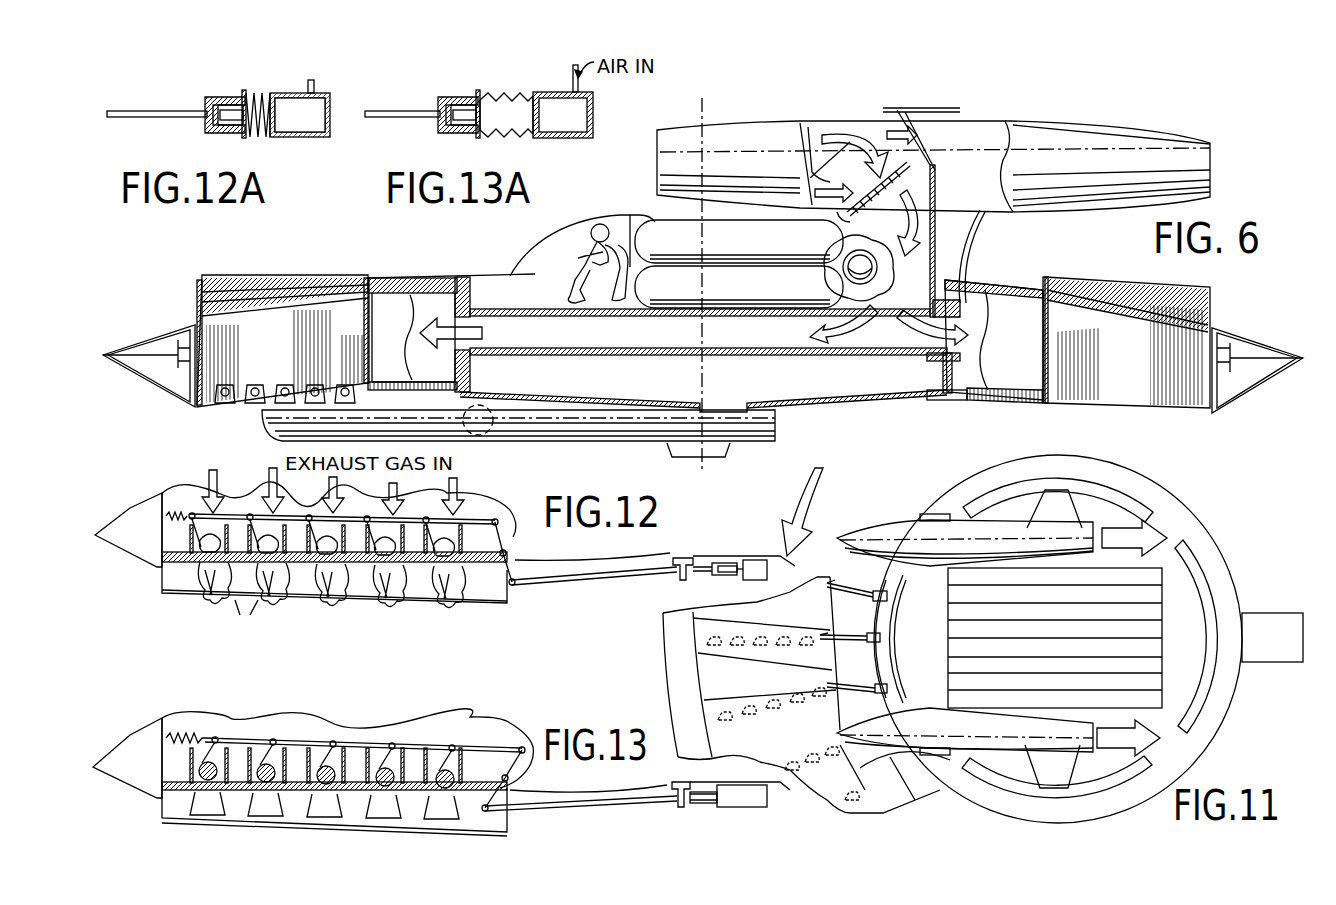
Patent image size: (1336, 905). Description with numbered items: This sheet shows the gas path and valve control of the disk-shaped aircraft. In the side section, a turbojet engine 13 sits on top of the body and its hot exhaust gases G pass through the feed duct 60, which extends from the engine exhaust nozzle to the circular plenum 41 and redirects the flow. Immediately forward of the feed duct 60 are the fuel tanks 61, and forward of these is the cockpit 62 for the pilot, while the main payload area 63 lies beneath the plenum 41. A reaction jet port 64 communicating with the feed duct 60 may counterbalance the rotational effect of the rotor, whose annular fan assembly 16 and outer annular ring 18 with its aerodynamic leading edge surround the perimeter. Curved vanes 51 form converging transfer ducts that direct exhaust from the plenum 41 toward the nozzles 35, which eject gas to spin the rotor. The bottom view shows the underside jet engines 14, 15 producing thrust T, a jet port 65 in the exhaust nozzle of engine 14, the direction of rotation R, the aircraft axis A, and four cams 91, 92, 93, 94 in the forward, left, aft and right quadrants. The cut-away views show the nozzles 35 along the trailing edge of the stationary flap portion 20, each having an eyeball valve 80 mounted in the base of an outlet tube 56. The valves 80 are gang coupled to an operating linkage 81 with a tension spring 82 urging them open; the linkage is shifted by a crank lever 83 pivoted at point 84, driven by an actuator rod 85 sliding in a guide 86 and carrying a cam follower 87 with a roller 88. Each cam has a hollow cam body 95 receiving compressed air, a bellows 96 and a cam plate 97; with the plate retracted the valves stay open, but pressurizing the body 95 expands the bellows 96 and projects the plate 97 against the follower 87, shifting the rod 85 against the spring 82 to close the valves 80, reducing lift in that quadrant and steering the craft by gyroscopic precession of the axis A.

In FIG. 6, the turbojet engine 13 is at (778, 128).
In FIG. 6, the jet engine 14 is at (553, 432).
In FIG. 11, the jet engine 14 is at (880, 530).
In FIG. 11, the jet engine 15 is at (927, 767).
In FIG. 6, the annular fan assembly 16 is at (195, 290).
In FIG. 6, the outer annular ring 18 is at (150, 382).
In FIG. 12, the outer annular ring 18 is at (137, 547).
In FIG. 13, the outer annular ring 18 is at (137, 777).
In FIG. 11, the outer annular ring 18 is at (667, 655).
In FIG. 12, the flap portion 20 is at (418, 592).
In FIG. 13, the flap portion 20 is at (472, 817).
In FIG. 6, the nozzles 35 is at (228, 407).
In FIG. 12, the nozzles 35 is at (245, 619).
In FIG. 13, the nozzles 35 is at (252, 808).
In FIG. 6, the plenum 41 is at (715, 357).
In FIG. 6, the curved vanes 51 is at (388, 305).
In FIG. 12, the outlet tubes 56 is at (245, 530).
In FIG. 13, the outlet tubes 56 is at (306, 750).
In FIG. 6, the feed duct 60 is at (965, 257).
In FIG. 6, the fuel tanks 61 is at (1010, 118).
In FIG. 6, the cockpit 62 is at (547, 245).
In FIG. 6, the main payload area 63 is at (820, 384).
In FIG. 6, the reaction jet port 64 is at (848, 257).
In FIG. 6, the jet port 65 is at (490, 410).
In FIG. 11, the jet port 65 is at (936, 514).
In FIG. 12, the eyeball valves 80 is at (352, 590).
In FIG. 12, the operating linkage 81 is at (485, 496).
In FIG. 13, the operating linkage 81 is at (472, 743).
In FIG. 12, the tension spring 82 is at (172, 508).
In FIG. 13, the tension spring 82 is at (183, 735).
In FIG. 12, the crank lever 83 is at (505, 536).
In FIG. 12, the pivot point 84 is at (516, 554).
In FIG. 12A, the actuator rod 85 is at (150, 110).
In FIG. 13A, the actuator rod 85 is at (400, 110).
In FIG. 12, the actuator rod 85 is at (645, 576).
In FIG. 13, the actuator rod 85 is at (583, 808).
In FIG. 11, the actuator rod 85 is at (888, 662).
In FIG. 12, the guide 86 is at (682, 557).
In FIG. 13, the guide 86 is at (677, 810).
In FIG. 12A, the cam follower 87 is at (213, 97).
In FIG. 13A, the cam follower 87 is at (463, 97).
In FIG. 12, the cam follower 87 is at (722, 562).
In FIG. 13, the cam follower 87 is at (698, 808).
In FIG. 11, the cam follower 87 is at (887, 630).
In FIG. 12A, the roller 88 is at (218, 126).
In FIG. 13A, the roller 88 is at (463, 126).
In FIG. 11, the cam 91 is at (897, 594).
In FIG. 11, the cam 92 is at (1002, 492).
In FIG. 11, the cam 93 is at (1205, 572).
In FIG. 11, the cam 94 is at (992, 790).
In FIG. 12A, the cam body 95 is at (290, 138).
In FIG. 13A, the cam body 95 is at (553, 138).
In FIG. 12A, the bellows 96 is at (257, 92).
In FIG. 13A, the bellows 96 is at (507, 92).
In FIG. 12A, the cam plate 97 is at (244, 138).
In FIG. 13A, the cam plate 97 is at (479, 138).
In FIG. 6, the axis A is at (703, 104).
In FIG. 11, the axis A is at (1057, 642).
In FIG. 6, the hot exhaust gases G is at (446, 348).
In FIG. 11, the direction of rotation R is at (815, 500).
In FIG. 11, the thrust arrow T is at (1155, 530).